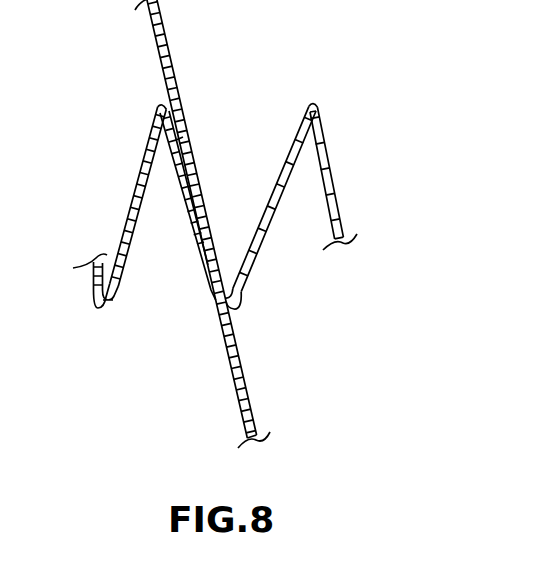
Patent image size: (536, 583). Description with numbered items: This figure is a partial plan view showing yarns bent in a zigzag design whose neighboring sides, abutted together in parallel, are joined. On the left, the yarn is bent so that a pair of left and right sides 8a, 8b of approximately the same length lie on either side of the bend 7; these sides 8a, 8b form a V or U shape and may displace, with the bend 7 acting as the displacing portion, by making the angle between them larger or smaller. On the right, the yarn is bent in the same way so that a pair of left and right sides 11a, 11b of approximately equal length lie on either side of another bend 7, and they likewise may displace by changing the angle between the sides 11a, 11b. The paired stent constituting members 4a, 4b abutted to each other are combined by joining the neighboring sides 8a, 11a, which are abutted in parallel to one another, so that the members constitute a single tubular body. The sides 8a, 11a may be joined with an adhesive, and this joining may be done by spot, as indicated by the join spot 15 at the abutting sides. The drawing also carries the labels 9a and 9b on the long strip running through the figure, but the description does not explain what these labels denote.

The stent constituting member 4a is at (138, 207).
The stent constituting member 4b is at (301, 207).
The bend 7 is at (158, 107).
The side 8a is at (187, 188).
The side 8b is at (124, 229).
The lower strip end 9a is at (246, 392).
The upper strip end 9b is at (158, 33).
The side 11a is at (329, 150).
The side 11b is at (267, 236).
The join spot 15 is at (190, 133).